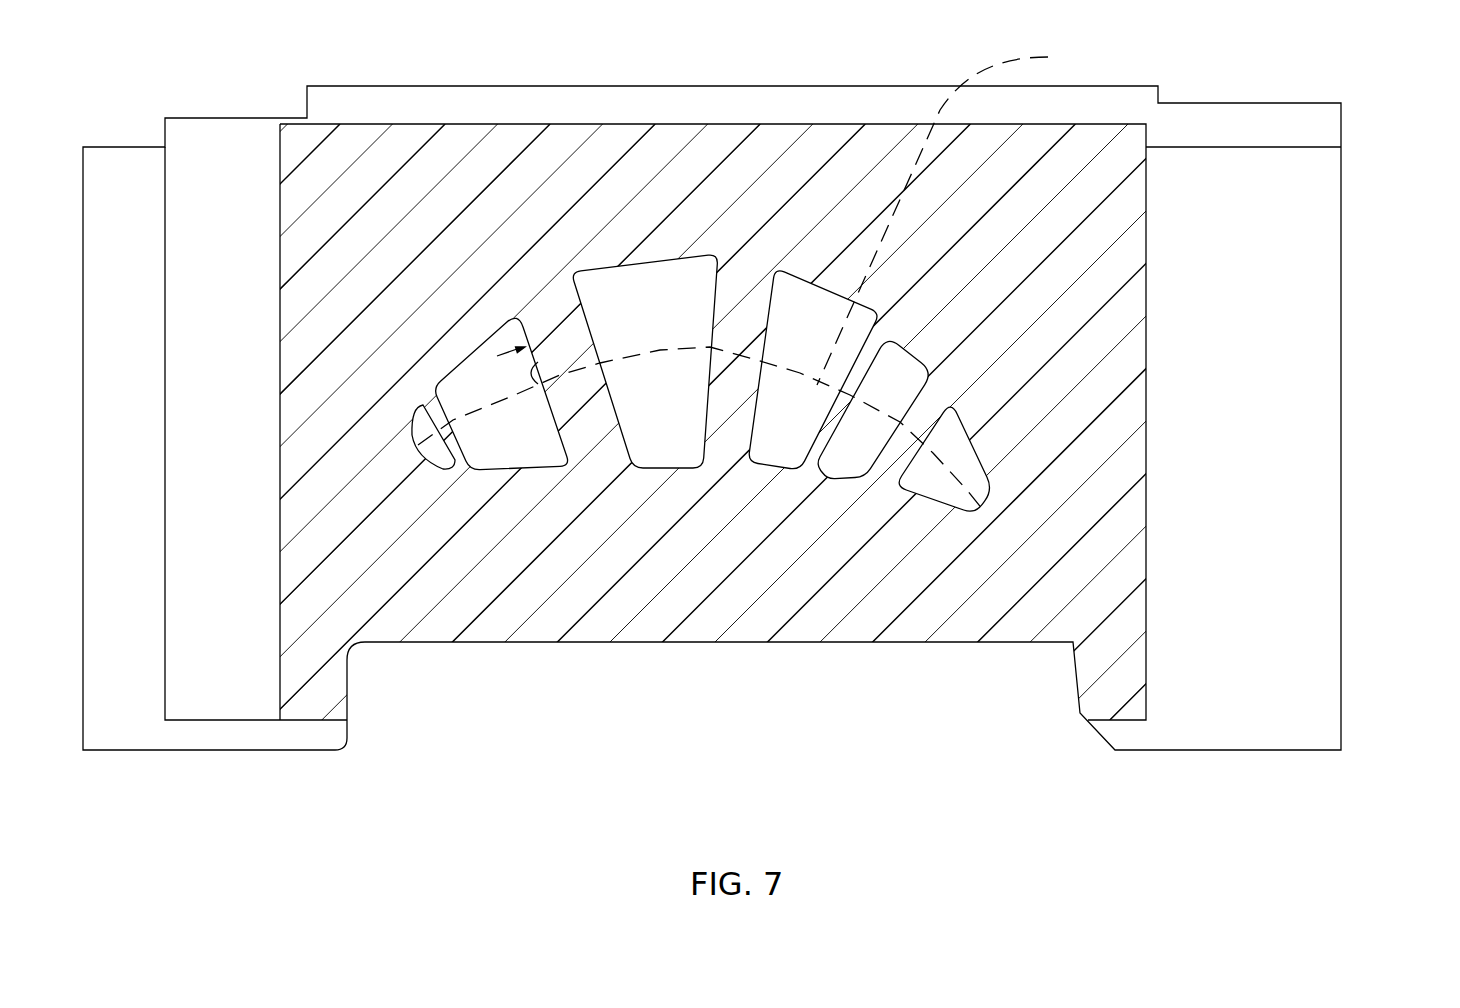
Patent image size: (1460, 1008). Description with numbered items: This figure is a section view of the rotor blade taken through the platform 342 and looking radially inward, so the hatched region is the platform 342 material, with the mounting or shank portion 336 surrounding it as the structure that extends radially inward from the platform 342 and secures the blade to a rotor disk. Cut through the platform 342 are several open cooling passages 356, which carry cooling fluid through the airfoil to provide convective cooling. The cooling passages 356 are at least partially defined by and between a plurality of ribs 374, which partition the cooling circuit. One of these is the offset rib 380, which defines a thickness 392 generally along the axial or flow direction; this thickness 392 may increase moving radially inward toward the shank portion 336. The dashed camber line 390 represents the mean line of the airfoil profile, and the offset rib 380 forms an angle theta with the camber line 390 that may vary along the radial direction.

The shank portion 336 is at (1300, 545).
The platform 342 is at (826, 145).
The cooling passages 356 is at (434, 457).
The ribs 374 is at (445, 432).
The offset rib 380 is at (596, 452).
The camber line 390 is at (963, 212).
The thickness 392 is at (587, 322).